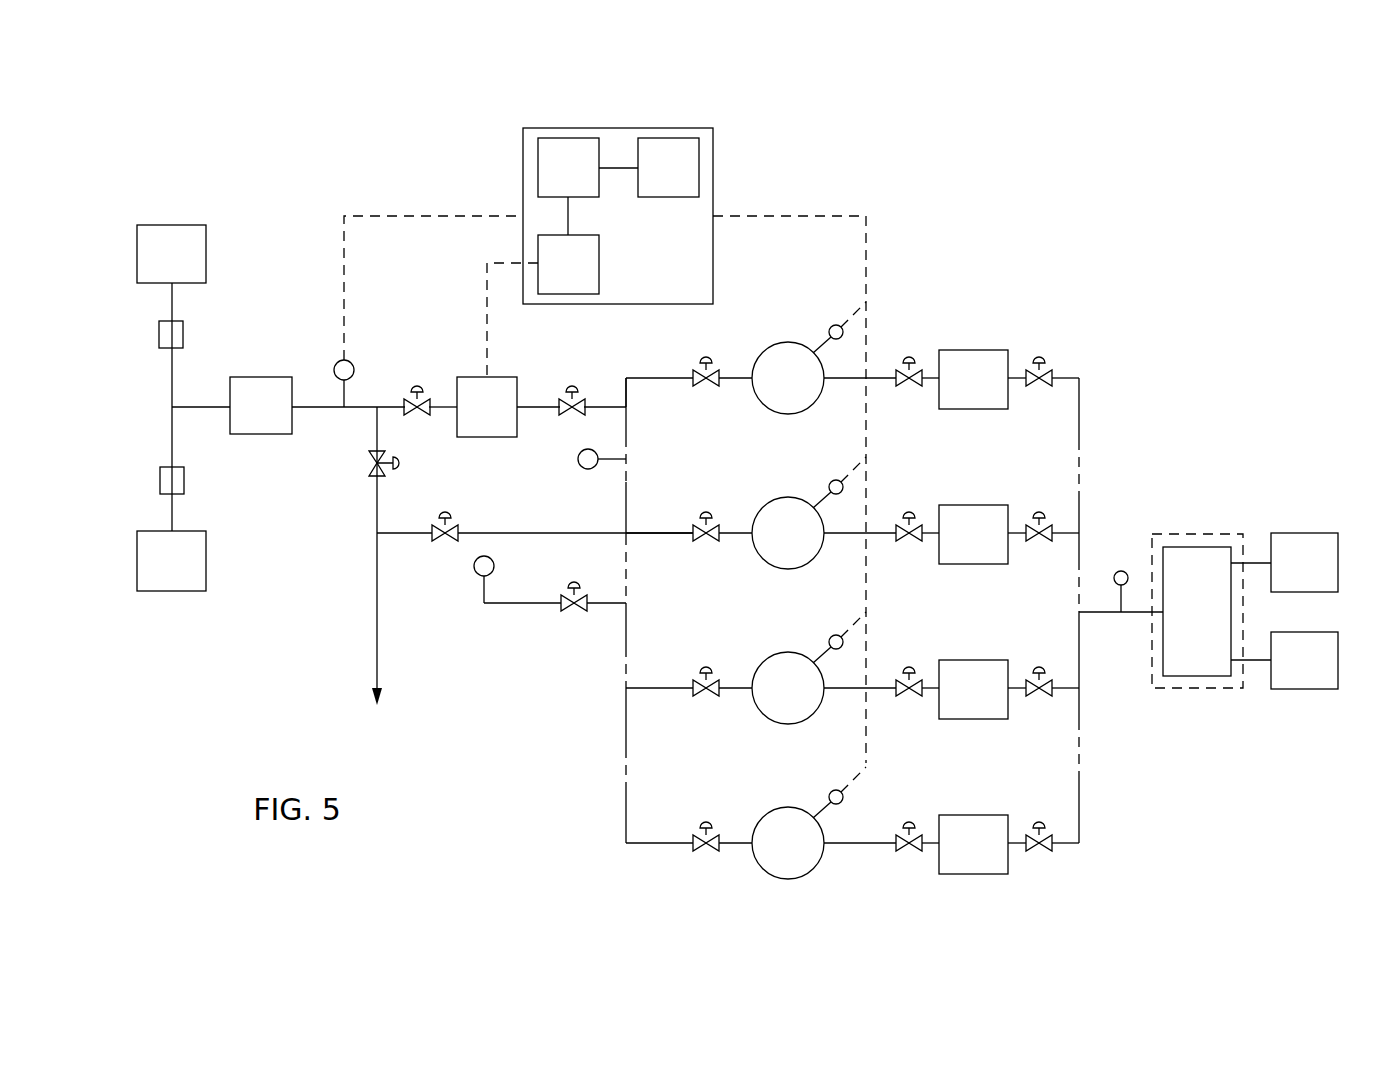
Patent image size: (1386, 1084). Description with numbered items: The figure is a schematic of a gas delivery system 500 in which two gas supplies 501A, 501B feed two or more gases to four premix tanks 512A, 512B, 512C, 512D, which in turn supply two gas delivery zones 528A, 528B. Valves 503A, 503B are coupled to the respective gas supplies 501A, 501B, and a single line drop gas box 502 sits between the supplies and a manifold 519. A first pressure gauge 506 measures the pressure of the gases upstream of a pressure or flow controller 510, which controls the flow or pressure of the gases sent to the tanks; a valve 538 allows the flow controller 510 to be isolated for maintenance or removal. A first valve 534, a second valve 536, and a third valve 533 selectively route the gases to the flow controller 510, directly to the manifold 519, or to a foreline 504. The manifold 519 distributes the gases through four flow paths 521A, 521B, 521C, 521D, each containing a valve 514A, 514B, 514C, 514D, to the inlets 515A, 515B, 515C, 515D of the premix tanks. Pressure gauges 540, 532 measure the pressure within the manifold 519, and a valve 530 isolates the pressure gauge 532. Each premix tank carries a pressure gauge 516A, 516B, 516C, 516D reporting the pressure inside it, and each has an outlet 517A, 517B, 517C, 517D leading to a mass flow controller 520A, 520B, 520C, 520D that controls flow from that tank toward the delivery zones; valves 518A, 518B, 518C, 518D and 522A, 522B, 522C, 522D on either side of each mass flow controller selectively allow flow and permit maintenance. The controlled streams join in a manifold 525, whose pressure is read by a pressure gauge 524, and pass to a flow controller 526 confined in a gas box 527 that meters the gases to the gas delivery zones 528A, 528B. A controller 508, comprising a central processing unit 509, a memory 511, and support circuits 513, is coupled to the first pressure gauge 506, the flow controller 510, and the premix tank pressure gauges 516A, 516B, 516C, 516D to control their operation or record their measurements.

The gas delivery system 500 is at (253, 200).
The gas supply 501A is at (152, 265).
The gas supply 501B is at (152, 572).
The single line drop gas box 502 is at (245, 418).
The valve 503A is at (183, 335).
The valve 503B is at (184, 482).
The foreline 504 is at (377, 636).
The first pressure gauge 506 is at (337, 362).
The controller 508 is at (652, 269).
The central processing unit 509 is at (552, 177).
The flow controller 510 is at (471, 418).
The memory 511 is at (652, 177).
The support circuits 513 is at (552, 274).
The premix tank 512A is at (766, 391).
The premix tank 512B is at (766, 546).
The premix tank 512C is at (766, 701).
The premix tank 512D is at (766, 856).
The valve 514A is at (707, 388).
The valve 514B is at (707, 543).
The valve 514C is at (707, 698).
The valve 514D is at (707, 853).
The inlet 515A is at (748, 360).
The inlet 515B is at (748, 515).
The inlet 515C is at (748, 670).
The inlet 515D is at (748, 825).
The pressure gauge 516A is at (830, 326).
The pressure gauge 516B is at (830, 481).
The pressure gauge 516C is at (830, 636).
The pressure gauge 516D is at (830, 791).
The outlet 517A is at (830, 392).
The outlet 517B is at (830, 547).
The outlet 517C is at (830, 702).
The outlet 517D is at (830, 857).
The valve 518A is at (909, 358).
The valve 518B is at (909, 513).
The valve 518C is at (909, 668).
The valve 518D is at (909, 823).
The manifold 519 is at (614, 833).
The mass flow controller 520A is at (950, 391).
The mass flow controller 520B is at (950, 546).
The mass flow controller 520C is at (950, 701).
The mass flow controller 520D is at (950, 856).
The flow path 521A is at (661, 374).
The flow path 521B is at (661, 529).
The flow path 521C is at (661, 684).
The flow path 521D is at (661, 839).
The valve 522A is at (1039, 358).
The valve 522B is at (1039, 513).
The valve 522C is at (1039, 668).
The valve 522D is at (1039, 823).
The pressure gauge 524 is at (1119, 570).
The manifold 525 is at (1093, 834).
The flow controller 526 is at (1181, 618).
The gas box 527 is at (1207, 533).
The gas delivery zone 528A is at (1282, 574).
The gas delivery zone 528B is at (1282, 672).
The valve 530 is at (576, 612).
The pressure gauge 532 is at (474, 566).
The third valve 533 is at (445, 510).
The first valve 534 is at (368, 465).
The second valve 536 is at (417, 383).
The valve 538 is at (572, 383).
The pressure gauge 540 is at (578, 459).